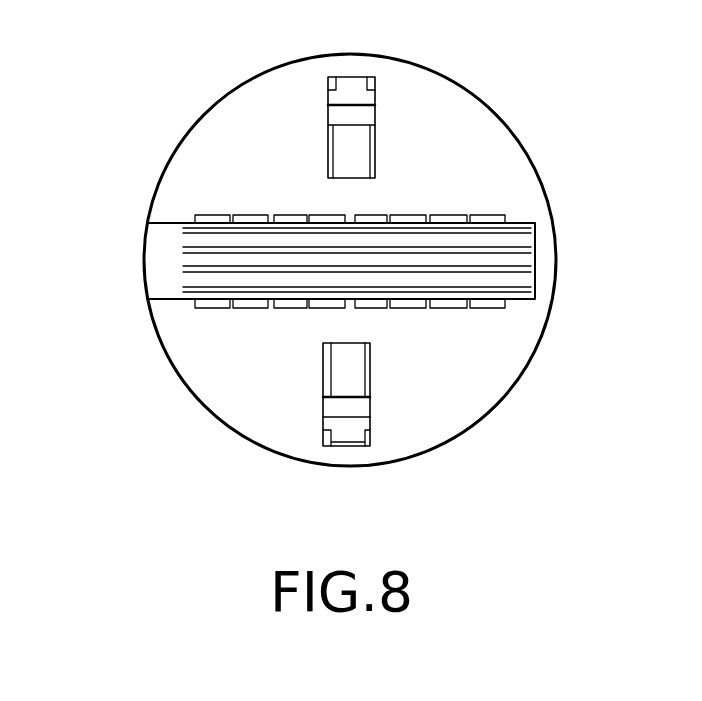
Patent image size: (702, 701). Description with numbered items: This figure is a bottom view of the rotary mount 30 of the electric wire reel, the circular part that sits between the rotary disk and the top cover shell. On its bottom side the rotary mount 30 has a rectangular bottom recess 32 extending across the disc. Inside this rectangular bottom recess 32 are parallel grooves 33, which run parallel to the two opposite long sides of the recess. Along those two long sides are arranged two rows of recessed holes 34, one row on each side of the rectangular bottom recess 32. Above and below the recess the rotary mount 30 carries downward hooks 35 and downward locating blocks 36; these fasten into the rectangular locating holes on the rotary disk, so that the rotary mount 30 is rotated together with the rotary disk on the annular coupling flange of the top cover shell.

The rotary mount 30 is at (193, 165).
The rectangular bottom recess 32 is at (157, 262).
The parallel grooves 33 is at (503, 238).
The recessed holes 34 is at (490, 309).
The downward hooks 35 is at (353, 90).
The downward locating blocks 36 is at (340, 147).